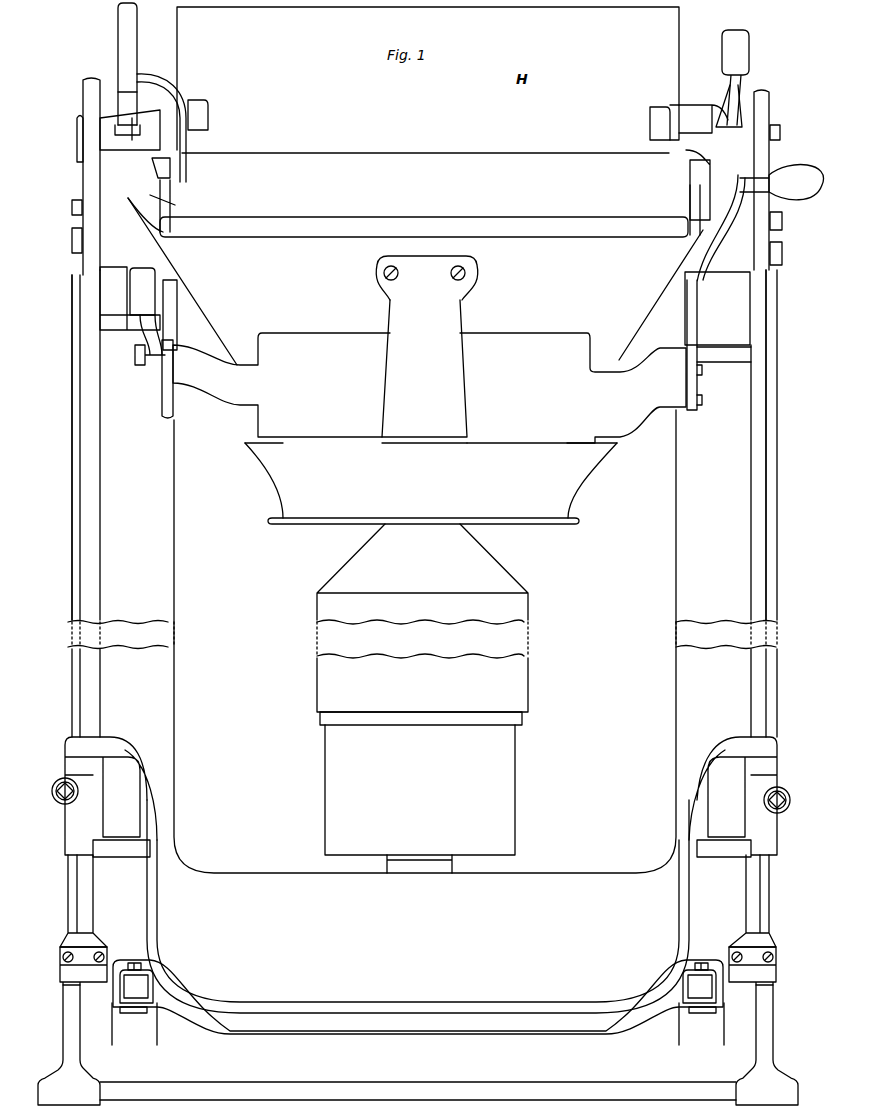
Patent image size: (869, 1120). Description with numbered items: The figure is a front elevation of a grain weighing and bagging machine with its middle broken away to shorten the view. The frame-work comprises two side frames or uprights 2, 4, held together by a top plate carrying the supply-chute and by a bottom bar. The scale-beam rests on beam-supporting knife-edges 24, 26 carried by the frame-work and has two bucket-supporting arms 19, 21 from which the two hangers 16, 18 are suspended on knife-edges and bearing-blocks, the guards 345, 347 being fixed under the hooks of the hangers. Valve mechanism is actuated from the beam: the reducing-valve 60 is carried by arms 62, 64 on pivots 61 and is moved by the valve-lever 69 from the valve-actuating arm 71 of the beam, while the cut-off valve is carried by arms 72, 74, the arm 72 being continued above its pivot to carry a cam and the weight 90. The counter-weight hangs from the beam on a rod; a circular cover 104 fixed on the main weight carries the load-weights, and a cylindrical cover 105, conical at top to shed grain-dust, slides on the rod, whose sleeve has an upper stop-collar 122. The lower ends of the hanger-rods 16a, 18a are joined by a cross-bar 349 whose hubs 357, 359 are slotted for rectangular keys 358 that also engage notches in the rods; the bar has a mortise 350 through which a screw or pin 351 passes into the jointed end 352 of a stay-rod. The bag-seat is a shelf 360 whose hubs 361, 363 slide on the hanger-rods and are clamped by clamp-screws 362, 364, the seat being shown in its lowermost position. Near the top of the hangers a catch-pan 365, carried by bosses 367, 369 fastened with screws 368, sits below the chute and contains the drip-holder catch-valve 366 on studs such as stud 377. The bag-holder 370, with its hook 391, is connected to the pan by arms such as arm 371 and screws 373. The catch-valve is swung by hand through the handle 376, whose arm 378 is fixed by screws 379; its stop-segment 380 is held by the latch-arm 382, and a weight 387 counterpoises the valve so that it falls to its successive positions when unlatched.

The side frame 2 is at (775, 488).
The side frame 4 is at (72, 586).
The hanger 16 is at (760, 120).
The hanger-rod 16a is at (763, 562).
The hanger 18 is at (93, 177).
The hanger-rod 18a is at (88, 538).
The bucket-supporting arm 19 is at (702, 105).
The bucket-supporting arm 21 is at (124, 150).
The beam-supporting knife-edge 24 is at (700, 168).
The beam-supporting knife-edge 26 is at (160, 160).
The reducing-valve 60 is at (481, 170).
The pivot 61 is at (210, 115).
The arm 62 is at (675, 143).
The arm 64 is at (176, 143).
The valve-lever 69 is at (124, 42).
The valve-actuating arm 71 is at (126, 90).
The arm 72 is at (733, 98).
The arm 74 is at (163, 208).
The weight 90 is at (743, 52).
The circular cover 104 is at (522, 719).
The cylindrical cover 105 is at (516, 611).
The upper stop-collar 122 is at (396, 868).
The guard 345 is at (778, 134).
The guard 347 is at (78, 122).
The cross-bar 349 is at (455, 1034).
The mortise 350 is at (153, 988).
The screw or pin 351 is at (128, 966).
The jointed end of stay-rod 352 is at (142, 988).
The hub of cross-bar 357 is at (762, 948).
The rectangular key 358 is at (70, 966).
The hub of cross-bar 359 is at (80, 940).
The shelf 360 is at (378, 1002).
The hub 361 is at (768, 767).
The clamp-screw 362 is at (787, 813).
The hub 363 is at (73, 762).
The clamp-screw 364 is at (55, 802).
The catch-pan 365 is at (533, 243).
The drip-holder catch-valve 366 is at (580, 415).
The projecting arm or boss 367 is at (738, 258).
The screws 368 is at (72, 248).
The projecting arm or boss 369 is at (118, 252).
The bag-holder 370 is at (578, 482).
The arm 371 is at (448, 378).
The screws 373 is at (453, 281).
The handle 376 is at (795, 192).
The stud 377 is at (137, 358).
The arm 378 is at (703, 284).
The screws 379 is at (701, 400).
The stop-segment 380 is at (170, 388).
The latch-arm 382 is at (180, 318).
The weight 387 is at (134, 285).
The hook 391 is at (427, 506).